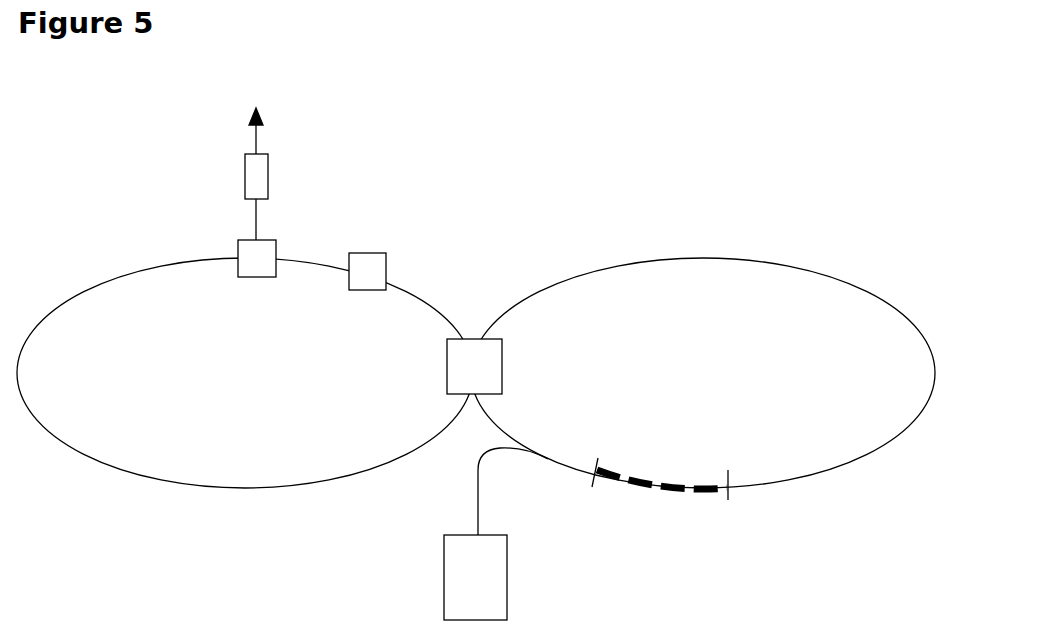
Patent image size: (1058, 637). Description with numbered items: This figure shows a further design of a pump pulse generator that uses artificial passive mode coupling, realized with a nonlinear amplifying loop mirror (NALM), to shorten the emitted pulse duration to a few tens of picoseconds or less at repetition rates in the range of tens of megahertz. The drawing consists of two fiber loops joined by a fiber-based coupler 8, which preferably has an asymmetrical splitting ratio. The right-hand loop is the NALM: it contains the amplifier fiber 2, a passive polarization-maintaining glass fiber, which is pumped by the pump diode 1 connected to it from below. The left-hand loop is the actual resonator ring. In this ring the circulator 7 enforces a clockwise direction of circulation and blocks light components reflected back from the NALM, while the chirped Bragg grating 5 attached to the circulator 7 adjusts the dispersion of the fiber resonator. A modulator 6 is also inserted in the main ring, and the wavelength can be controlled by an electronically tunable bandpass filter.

The pump diode 1 is at (443, 588).
The amplifier fiber 2 is at (667, 472).
The chirped Bragg grating 5 is at (268, 152).
The modulator 6 is at (368, 250).
The circulator 7 is at (204, 237).
The coupler 8 is at (477, 320).